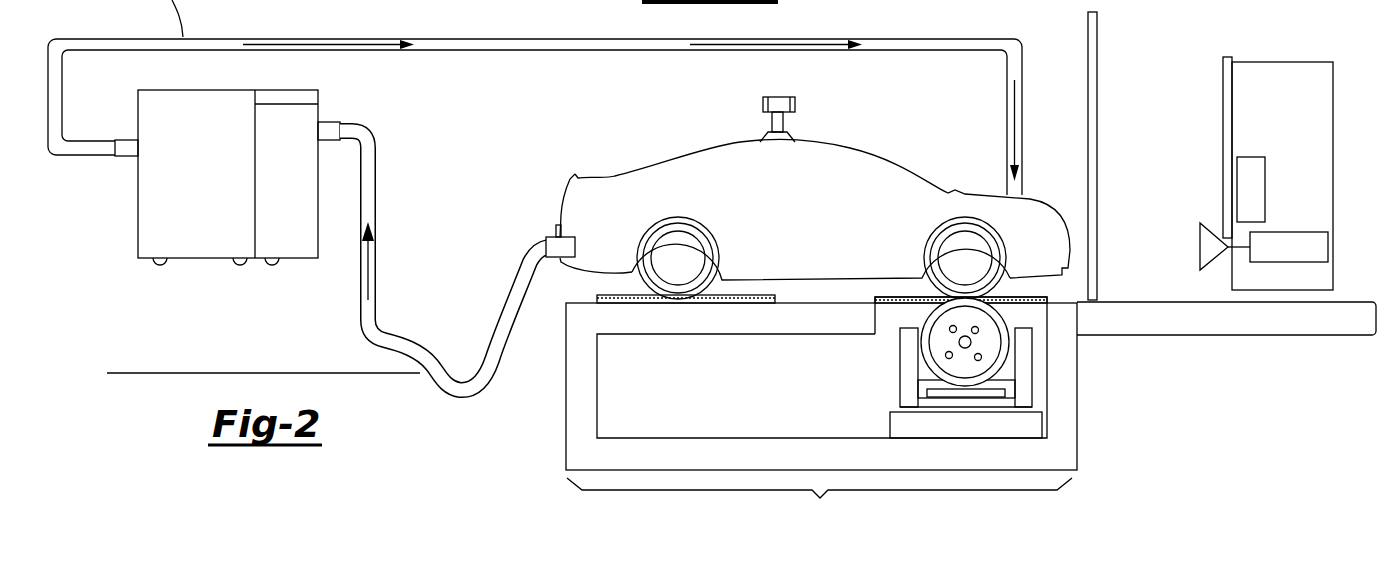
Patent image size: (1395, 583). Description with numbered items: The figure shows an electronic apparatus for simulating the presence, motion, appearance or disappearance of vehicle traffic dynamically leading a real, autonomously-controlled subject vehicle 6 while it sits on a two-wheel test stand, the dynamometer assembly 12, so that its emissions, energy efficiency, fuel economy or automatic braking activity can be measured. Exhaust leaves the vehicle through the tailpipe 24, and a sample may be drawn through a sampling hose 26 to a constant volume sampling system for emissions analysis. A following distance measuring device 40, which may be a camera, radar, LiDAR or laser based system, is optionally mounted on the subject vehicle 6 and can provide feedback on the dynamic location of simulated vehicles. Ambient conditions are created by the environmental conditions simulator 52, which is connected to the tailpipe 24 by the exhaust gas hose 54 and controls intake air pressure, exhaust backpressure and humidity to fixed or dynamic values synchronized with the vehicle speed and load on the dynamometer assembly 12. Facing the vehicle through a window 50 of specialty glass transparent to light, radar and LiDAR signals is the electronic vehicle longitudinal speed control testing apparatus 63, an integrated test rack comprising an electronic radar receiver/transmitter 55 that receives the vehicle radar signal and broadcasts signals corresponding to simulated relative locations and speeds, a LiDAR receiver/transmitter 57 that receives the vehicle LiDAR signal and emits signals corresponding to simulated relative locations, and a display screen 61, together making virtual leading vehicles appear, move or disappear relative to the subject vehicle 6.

The subject vehicle 6 is at (968, 193).
The dynamometer assembly 12 is at (821, 414).
The vehicle tailpipe 24 is at (556, 228).
The sampling hose 26 is at (200, 372).
The following distance measuring device 40 is at (778, 97).
The window 50 is at (1099, 38).
The environmental conditions simulator 52 is at (138, 217).
The exhaust gas hose 54 is at (505, 285).
The electronic radar receiver/transmitter 55 is at (1312, 247).
The LiDAR receiver/transmitter 57 is at (1268, 190).
The display screen 61 is at (1224, 120).
The electronic Vehicle Longitudinal Speed Control Testing Apparatus 63 is at (1301, 75).